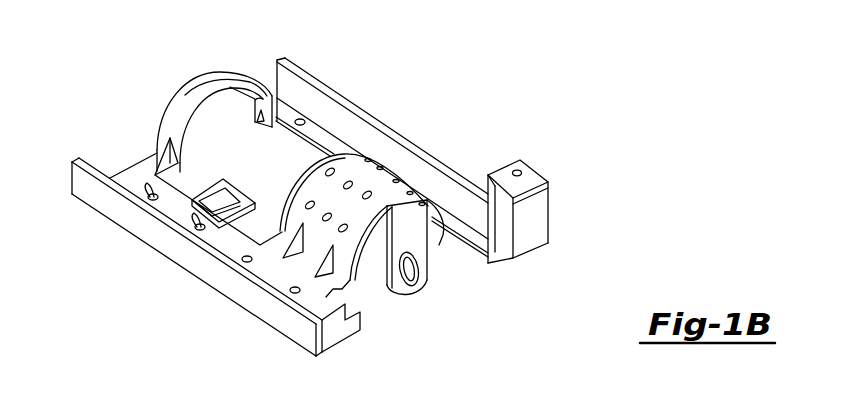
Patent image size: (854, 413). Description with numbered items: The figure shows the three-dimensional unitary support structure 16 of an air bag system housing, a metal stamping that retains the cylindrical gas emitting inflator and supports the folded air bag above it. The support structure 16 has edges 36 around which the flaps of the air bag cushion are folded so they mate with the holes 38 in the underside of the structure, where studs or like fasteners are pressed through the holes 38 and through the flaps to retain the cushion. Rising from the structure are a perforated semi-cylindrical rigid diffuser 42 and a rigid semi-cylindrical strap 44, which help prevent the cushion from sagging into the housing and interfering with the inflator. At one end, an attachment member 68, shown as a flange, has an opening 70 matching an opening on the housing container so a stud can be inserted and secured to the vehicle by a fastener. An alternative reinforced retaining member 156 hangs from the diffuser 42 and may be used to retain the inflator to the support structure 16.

The support structure 16 is at (208, 272).
The edges 36 is at (80, 190).
The holes 38 is at (197, 217).
The perforated semi-cylindrical rigid diffuser 42 is at (363, 165).
The rigid semi-cylindrical strap 44 is at (227, 80).
The attachment member 68 is at (507, 235).
The opening 70 is at (527, 176).
The reinforced retaining member 156 is at (423, 252).